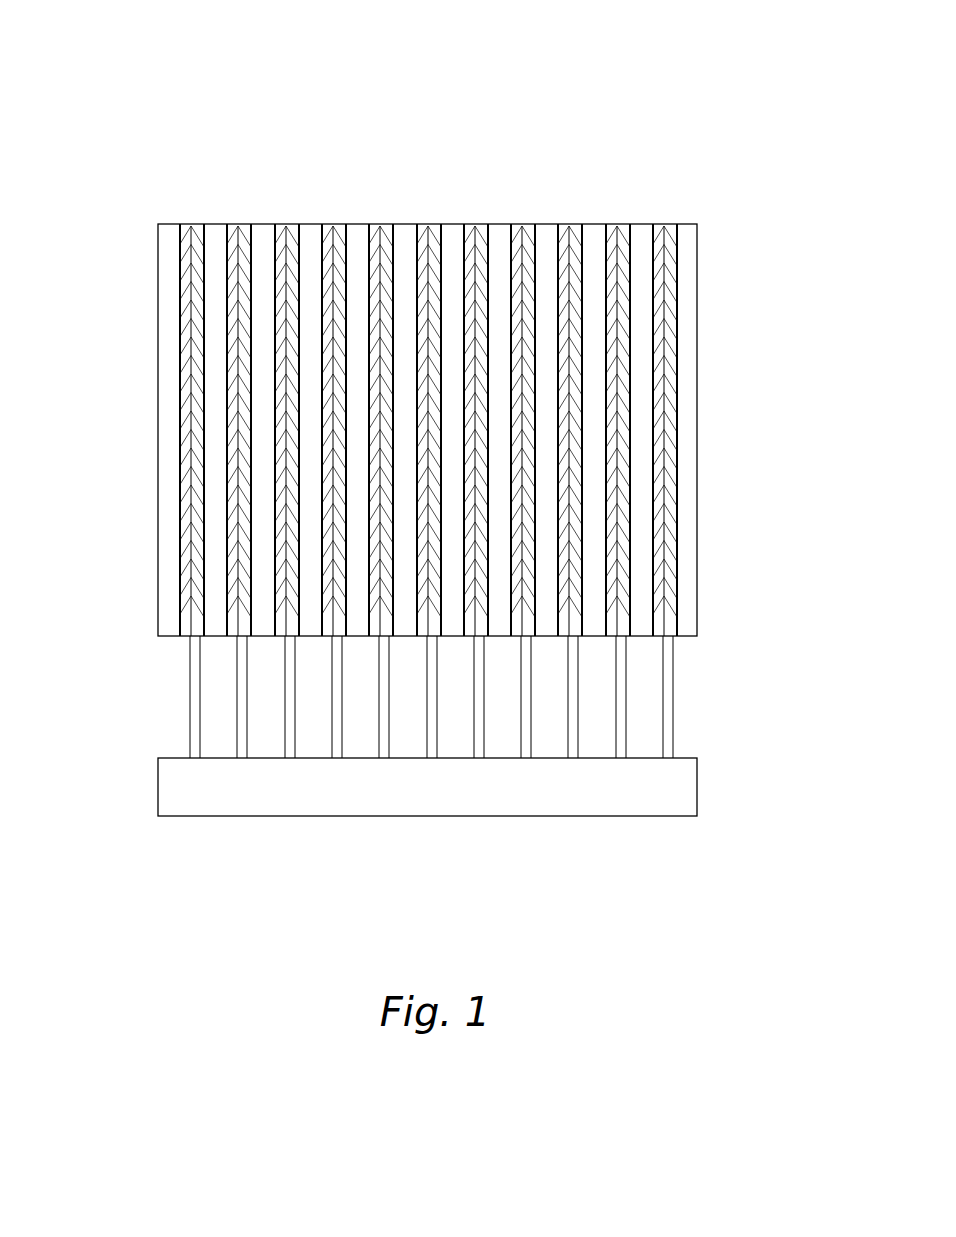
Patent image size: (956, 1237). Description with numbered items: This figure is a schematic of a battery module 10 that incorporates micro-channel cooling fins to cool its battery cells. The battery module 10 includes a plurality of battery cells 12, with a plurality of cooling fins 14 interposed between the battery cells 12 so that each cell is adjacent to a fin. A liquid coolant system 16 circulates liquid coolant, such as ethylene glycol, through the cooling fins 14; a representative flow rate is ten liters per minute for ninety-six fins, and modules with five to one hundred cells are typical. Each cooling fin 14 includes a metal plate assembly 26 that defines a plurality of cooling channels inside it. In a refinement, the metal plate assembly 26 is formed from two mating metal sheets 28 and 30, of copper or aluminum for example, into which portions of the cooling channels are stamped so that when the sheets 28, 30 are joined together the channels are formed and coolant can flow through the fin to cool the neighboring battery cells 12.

The battery module 10 is at (662, 102).
The battery cells 12 is at (171, 237).
The cooling fins 14 is at (192, 218).
The liquid coolant system 16 is at (140, 729).
The metal plate assembly 26 is at (172, 647).
The metal sheet 28 is at (180, 286).
The metal sheet 30 is at (197, 347).